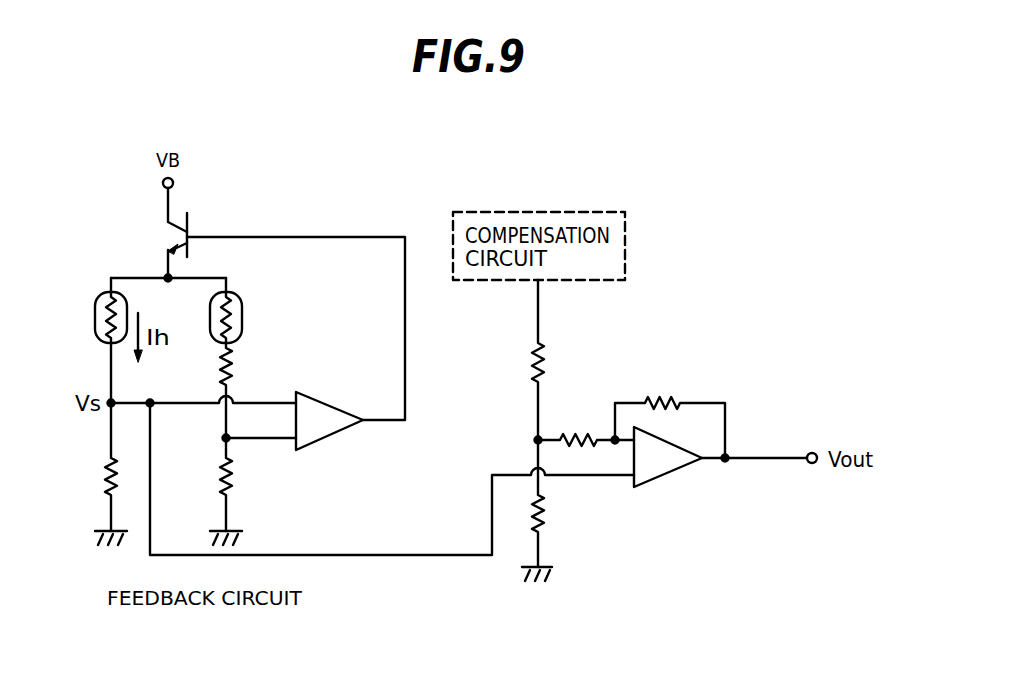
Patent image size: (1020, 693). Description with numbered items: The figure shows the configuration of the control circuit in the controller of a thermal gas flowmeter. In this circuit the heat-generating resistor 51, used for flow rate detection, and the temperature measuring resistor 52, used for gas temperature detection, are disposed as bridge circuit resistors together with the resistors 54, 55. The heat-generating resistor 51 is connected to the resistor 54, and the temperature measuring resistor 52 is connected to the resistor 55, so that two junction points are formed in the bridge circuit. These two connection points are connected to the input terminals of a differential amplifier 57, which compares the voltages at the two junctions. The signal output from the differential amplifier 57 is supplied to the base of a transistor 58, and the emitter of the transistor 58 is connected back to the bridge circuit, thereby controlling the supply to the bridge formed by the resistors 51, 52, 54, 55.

The heat-generating resistor 51 is at (97, 297).
The temperature measuring resistor 52 is at (240, 297).
The resistor 54 is at (105, 495).
The resistor 55 is at (232, 475).
The differential amplifier 57 is at (327, 399).
The transistor 58 is at (189, 224).